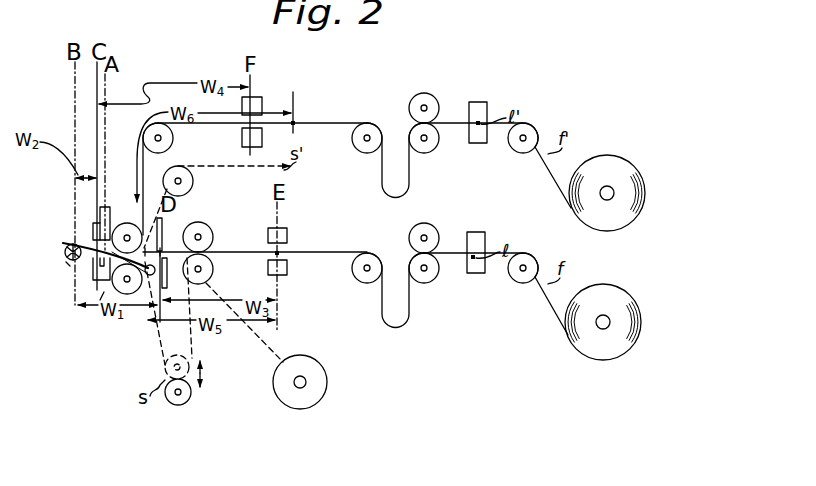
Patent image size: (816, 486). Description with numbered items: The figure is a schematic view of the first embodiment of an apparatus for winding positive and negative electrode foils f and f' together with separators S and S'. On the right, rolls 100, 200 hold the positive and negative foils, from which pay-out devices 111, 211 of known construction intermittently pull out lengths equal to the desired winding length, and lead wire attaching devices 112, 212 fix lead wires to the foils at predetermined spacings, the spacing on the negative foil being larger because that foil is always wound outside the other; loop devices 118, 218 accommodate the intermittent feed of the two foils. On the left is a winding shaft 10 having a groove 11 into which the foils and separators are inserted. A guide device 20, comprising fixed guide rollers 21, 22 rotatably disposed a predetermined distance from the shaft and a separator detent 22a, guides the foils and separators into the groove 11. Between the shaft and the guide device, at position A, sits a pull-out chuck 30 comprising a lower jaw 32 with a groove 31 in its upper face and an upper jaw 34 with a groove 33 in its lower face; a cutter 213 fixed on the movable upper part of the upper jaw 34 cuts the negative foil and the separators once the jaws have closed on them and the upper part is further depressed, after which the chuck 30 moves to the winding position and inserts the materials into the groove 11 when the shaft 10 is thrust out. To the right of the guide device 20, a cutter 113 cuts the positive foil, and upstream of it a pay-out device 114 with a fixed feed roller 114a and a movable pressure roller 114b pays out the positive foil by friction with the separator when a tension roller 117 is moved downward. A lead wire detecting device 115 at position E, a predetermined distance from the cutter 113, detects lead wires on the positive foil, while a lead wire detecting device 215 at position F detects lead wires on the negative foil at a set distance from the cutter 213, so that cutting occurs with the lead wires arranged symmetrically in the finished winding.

The winding shaft 10 is at (67, 266).
The groove 11 is at (63, 256).
The guide device 20 is at (142, 300).
The fixed guide roller 21 is at (127, 223).
The fixed guide roller 22 is at (128, 294).
The separator detent 22a is at (108, 290).
The pull-out chuck 30 is at (88, 212).
The groove 31 is at (100, 300).
The lower jaw 32 is at (94, 279).
The groove 33 is at (63, 243).
The upper jaw 34 is at (112, 205).
The roll of positive electrode foil 100 is at (611, 293).
The pay-out device 111 is at (438, 226).
The lead wire attaching device 112 is at (489, 231).
The cutter 113 is at (168, 228).
The pay-out device 114 is at (221, 241).
The feed roller 114a is at (214, 272).
The pressure roller 114b is at (214, 240).
The lead wire detecting device 115 is at (290, 231).
The tension roller 117 is at (190, 398).
The loop device 118 is at (394, 330).
The roll of negative electrode foil 200 is at (618, 164).
The pay-out device 211 is at (439, 97).
The lead wire attaching device 212 is at (491, 100).
The cutter 213 is at (93, 223).
The lead wire detecting device 215 is at (257, 92).
The loop device 218 is at (393, 206).